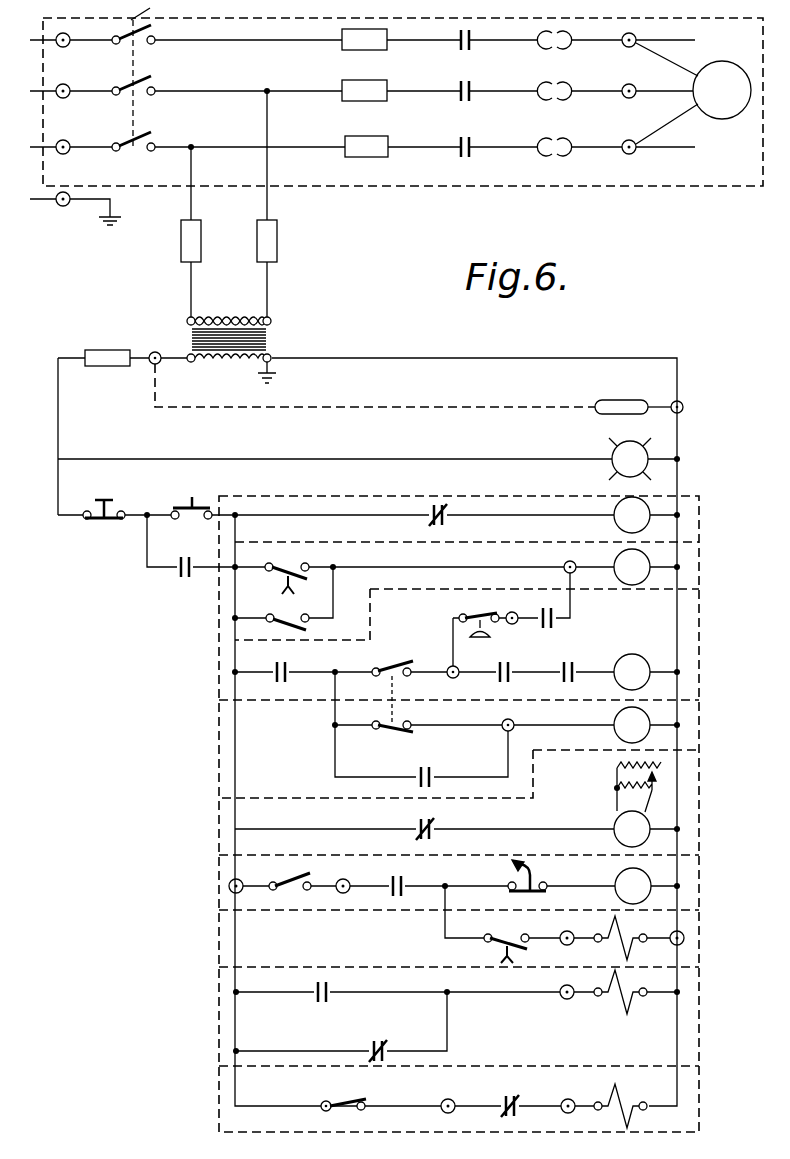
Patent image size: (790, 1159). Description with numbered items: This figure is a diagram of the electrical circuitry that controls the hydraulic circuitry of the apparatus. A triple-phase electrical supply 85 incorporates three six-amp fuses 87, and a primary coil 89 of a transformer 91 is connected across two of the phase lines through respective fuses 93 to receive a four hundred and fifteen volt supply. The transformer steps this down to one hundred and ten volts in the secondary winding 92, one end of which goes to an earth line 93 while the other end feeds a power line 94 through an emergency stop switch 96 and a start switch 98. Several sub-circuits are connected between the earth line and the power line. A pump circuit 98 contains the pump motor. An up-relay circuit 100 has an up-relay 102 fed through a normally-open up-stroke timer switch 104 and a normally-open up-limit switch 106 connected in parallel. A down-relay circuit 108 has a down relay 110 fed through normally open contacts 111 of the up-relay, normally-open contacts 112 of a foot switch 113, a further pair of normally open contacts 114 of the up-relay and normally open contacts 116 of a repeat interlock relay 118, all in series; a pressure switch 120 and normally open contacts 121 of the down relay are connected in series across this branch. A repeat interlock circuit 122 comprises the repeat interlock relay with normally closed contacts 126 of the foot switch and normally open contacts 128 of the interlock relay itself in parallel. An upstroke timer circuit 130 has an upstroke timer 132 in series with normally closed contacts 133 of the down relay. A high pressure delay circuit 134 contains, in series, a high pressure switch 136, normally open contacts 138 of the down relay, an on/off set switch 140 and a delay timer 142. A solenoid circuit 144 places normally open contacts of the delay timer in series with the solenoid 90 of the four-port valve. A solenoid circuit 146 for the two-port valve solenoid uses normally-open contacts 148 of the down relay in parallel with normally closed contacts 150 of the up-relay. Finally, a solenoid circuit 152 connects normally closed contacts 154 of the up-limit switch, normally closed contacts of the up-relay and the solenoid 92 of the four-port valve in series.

The triple-phase electrical supply 85 is at (667, 172).
The fuses 87 is at (350, 136).
The primary coil 89 is at (250, 322).
The solenoid 90 is at (622, 935).
The transformer 91 is at (262, 337).
The secondary winding 92 is at (210, 362).
The fuses 93 is at (255, 238).
The power line 94 is at (219, 745).
The emergency stop switch 96 is at (90, 522).
The start switch 98 is at (198, 506).
The up-relay circuit 100 is at (686, 566).
The up-relay 102 is at (622, 549).
The up-stroke timer switch 104 is at (298, 565).
The up-limit switch 106 is at (290, 617).
The down-relay circuit 108 is at (686, 644).
The down relay 110 is at (633, 653).
The normally open contacts of the up-relay 111 is at (290, 667).
The normally open contacts of the foot switch 112 is at (398, 662).
The foot switch 113 is at (380, 690).
The further pair of normally open contacts of the up-relay 114 is at (500, 681).
The normally open contacts of the repeat interlock relay 116 is at (568, 661).
The repeat interlock relay 118 is at (617, 716).
The pressure switch 120 is at (487, 615).
The normally open contacts of the down-relay 121 is at (551, 620).
The repeat interlock circuit 122 is at (686, 726).
The normally closed contacts of the foot switch 126 is at (388, 735).
The normally open contacts of the interlock relay 128 is at (432, 768).
The upstroke timer circuit 130 is at (686, 808).
The upstroke timer 132 is at (617, 821).
The normally closed contacts of the down-relay 133 is at (436, 823).
The high pressure delay circuit 134 is at (686, 902).
The high pressure switch 136 is at (292, 890).
The normally open contacts of the down relay 138 is at (396, 898).
The on/off set switch 140 is at (542, 881).
The delay timer 142 is at (642, 884).
The solenoid circuit 144 is at (686, 942).
The solenoid circuit 146 is at (690, 1012).
The normally-open contacts of the down relay 148 is at (312, 998).
The normally closed contacts of the up-relay 150 is at (383, 1042).
The solenoid circuit 152 is at (690, 1097).
The normally closed contacts of the up-limit switch 154 is at (340, 1110).